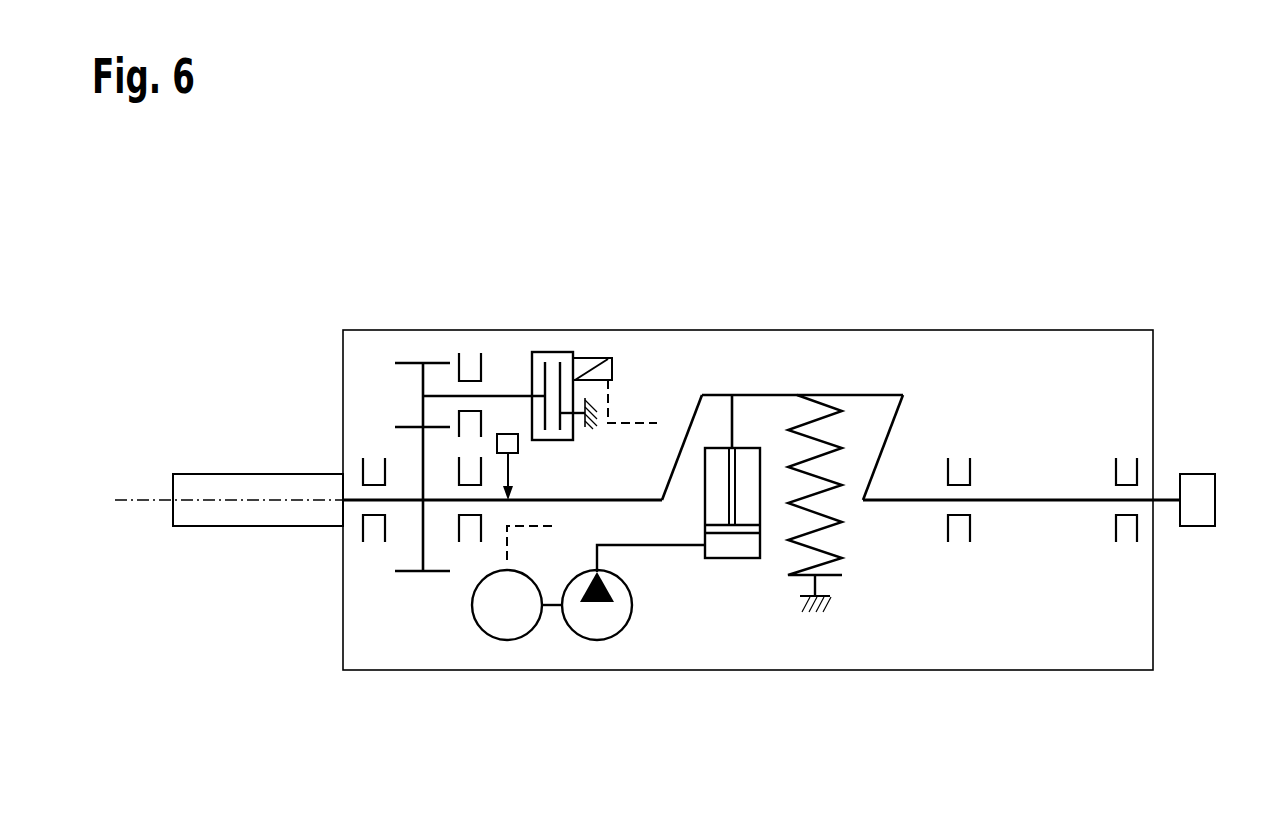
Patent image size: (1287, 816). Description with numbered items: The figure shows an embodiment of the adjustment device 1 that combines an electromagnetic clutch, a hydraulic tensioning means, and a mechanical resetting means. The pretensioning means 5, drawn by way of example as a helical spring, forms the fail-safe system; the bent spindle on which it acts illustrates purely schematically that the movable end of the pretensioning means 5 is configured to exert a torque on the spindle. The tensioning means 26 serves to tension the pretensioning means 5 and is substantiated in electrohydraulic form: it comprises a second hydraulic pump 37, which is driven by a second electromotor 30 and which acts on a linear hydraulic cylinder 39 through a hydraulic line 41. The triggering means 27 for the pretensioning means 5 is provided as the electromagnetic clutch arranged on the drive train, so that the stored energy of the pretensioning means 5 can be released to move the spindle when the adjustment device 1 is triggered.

The adjustment device 1 is at (1182, 259).
The pretensioning means 5 is at (856, 556).
The tensioning means 26 is at (552, 634).
The triggering means 27 is at (516, 359).
The second electromotor 30 is at (503, 639).
The second hydraulic pump 37 is at (590, 639).
The hydraulic cylinder 39 is at (735, 559).
The hydraulic line 41 is at (668, 546).